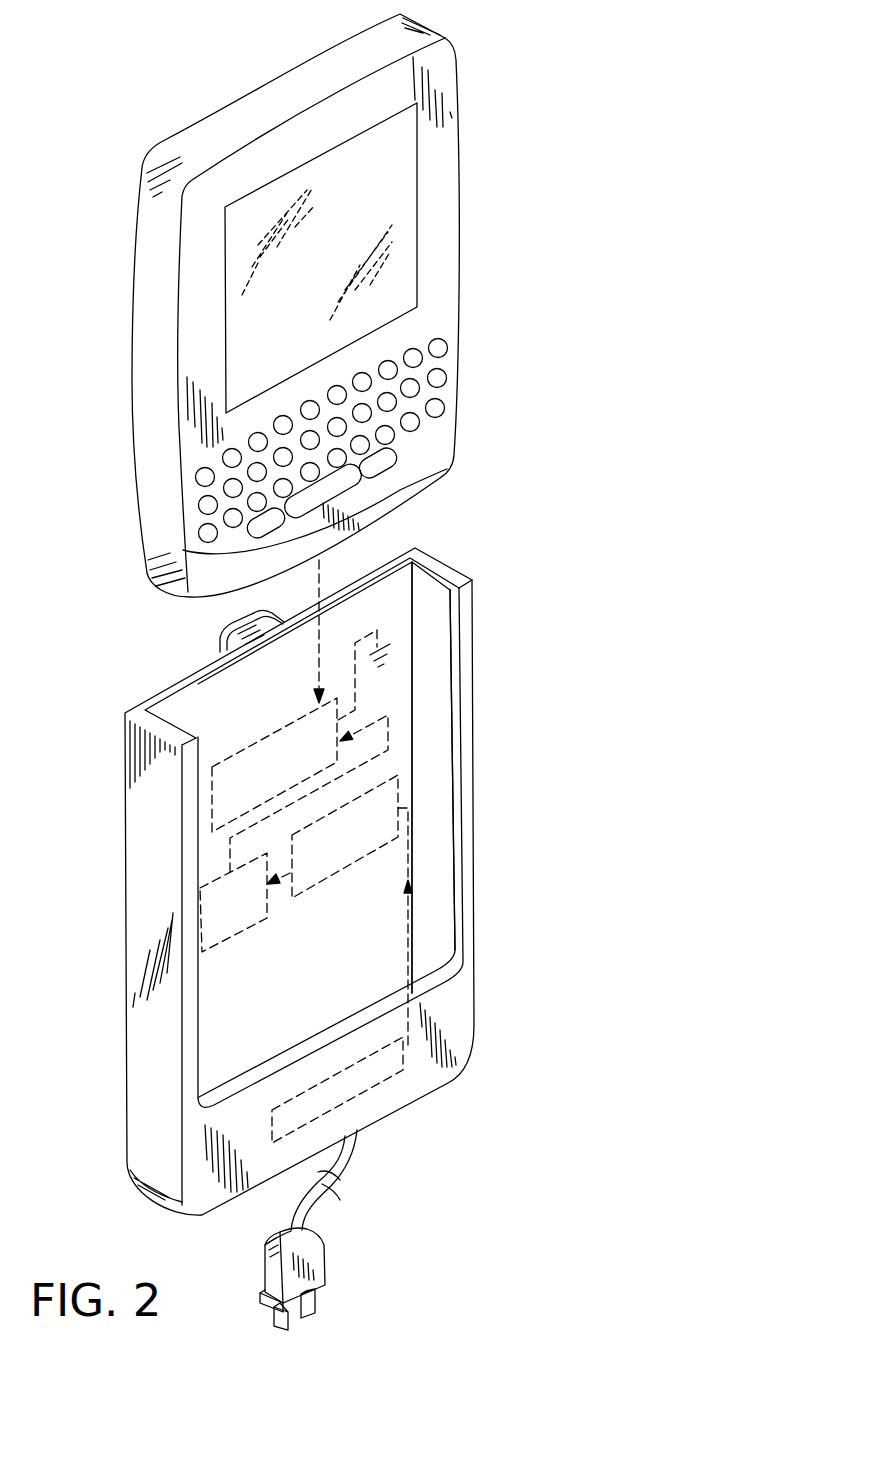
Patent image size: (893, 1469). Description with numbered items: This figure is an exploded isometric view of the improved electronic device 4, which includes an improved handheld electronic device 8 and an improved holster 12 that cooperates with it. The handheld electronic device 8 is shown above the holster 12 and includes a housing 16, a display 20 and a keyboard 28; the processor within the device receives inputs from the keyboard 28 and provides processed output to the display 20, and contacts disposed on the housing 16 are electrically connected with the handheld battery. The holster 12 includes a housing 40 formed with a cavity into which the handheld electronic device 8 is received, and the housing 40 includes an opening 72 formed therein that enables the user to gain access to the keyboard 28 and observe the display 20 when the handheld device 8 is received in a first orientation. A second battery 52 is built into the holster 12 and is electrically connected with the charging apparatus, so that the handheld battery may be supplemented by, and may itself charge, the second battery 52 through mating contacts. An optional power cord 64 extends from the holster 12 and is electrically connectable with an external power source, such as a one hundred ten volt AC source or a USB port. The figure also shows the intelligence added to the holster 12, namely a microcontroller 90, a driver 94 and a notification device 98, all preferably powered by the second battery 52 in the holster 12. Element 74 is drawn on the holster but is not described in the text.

The electronic device 4 is at (341, 672).
The handheld electronic device 8 is at (349, 305).
The holster 12 is at (341, 939).
The housing 16 is at (468, 112).
The display 20 is at (392, 219).
The keyboard 28 is at (453, 358).
The housing 40 is at (474, 870).
The second battery 52 is at (350, 1100).
The power cord 64 is at (320, 1208).
The opening 72 is at (453, 660).
The retention clip 74 is at (190, 708).
The microcontroller 90 is at (318, 887).
The driver 94 is at (233, 937).
The notification device 98 is at (253, 741).